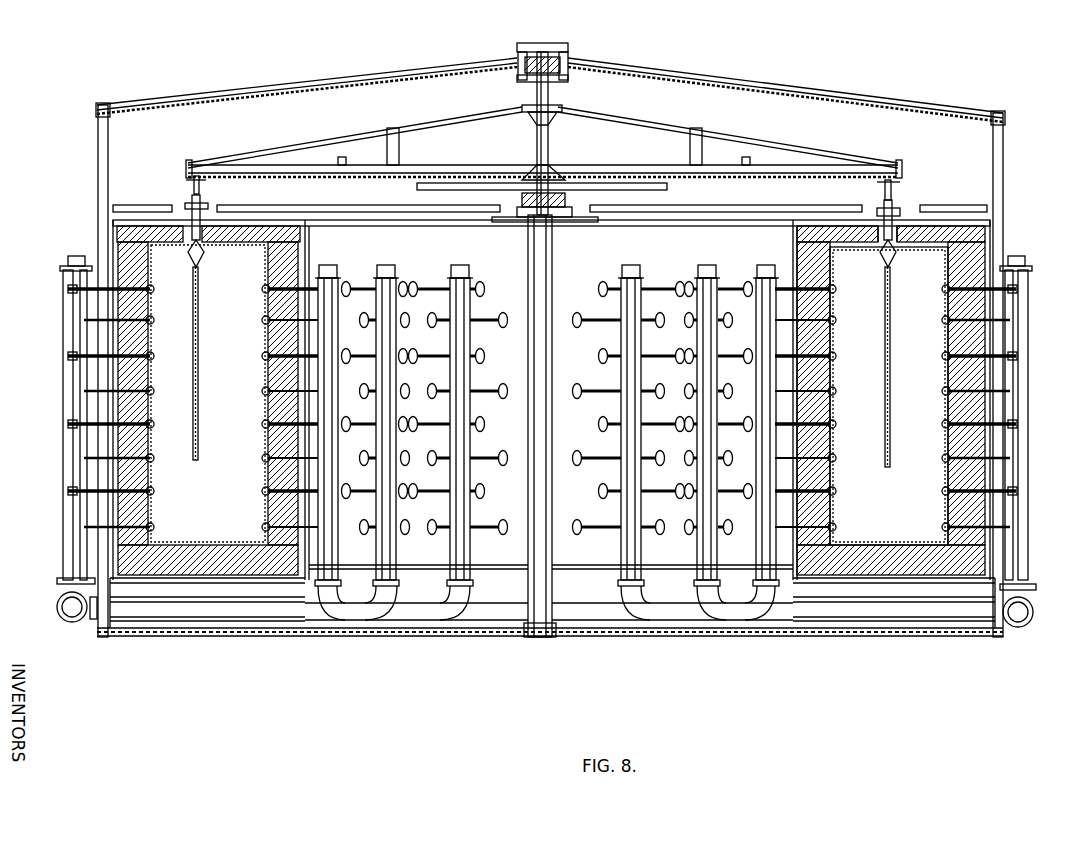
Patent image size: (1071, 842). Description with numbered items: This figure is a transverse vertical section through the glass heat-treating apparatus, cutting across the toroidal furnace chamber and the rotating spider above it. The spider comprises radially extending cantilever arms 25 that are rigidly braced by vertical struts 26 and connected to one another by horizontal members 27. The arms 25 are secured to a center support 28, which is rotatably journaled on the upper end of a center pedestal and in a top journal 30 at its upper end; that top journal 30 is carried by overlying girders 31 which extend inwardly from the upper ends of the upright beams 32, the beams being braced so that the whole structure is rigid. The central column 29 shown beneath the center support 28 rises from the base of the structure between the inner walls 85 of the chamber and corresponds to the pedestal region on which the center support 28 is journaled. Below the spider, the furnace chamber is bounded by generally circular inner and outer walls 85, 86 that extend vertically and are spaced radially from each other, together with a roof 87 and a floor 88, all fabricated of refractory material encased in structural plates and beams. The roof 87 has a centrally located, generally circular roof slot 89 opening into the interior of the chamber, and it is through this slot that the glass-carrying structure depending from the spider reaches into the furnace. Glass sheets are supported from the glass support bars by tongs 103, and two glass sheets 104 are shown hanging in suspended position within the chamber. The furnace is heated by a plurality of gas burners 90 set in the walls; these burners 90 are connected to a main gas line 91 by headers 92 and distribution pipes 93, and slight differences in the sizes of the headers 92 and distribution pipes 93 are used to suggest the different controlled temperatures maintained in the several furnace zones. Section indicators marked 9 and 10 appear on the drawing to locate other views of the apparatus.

The cantilever arm 25 is at (440, 122).
The vertical strut 26 is at (400, 148).
The horizontal member 27 is at (342, 158).
The center support 28 is at (550, 152).
The central column 29 is at (553, 256).
The top journal 30 is at (570, 48).
The girder 31 is at (342, 78).
The beam 32 is at (98, 163).
The section line 9- 9 is at (868, 186).
The section line 10- 10 is at (186, 200).
The inner wall 85 is at (832, 275).
The outer wall 86 is at (990, 262).
The roof 87 is at (988, 216).
The floor 88 is at (897, 547).
The roof slot 89 is at (905, 245).
The gas burner 90 is at (1002, 348).
The main gas line 91 is at (673, 625).
The header 92 is at (1024, 535).
The distribution pipe 93 is at (1002, 420).
The tongs 103 is at (202, 254).
The glass sheet 104 is at (200, 342).